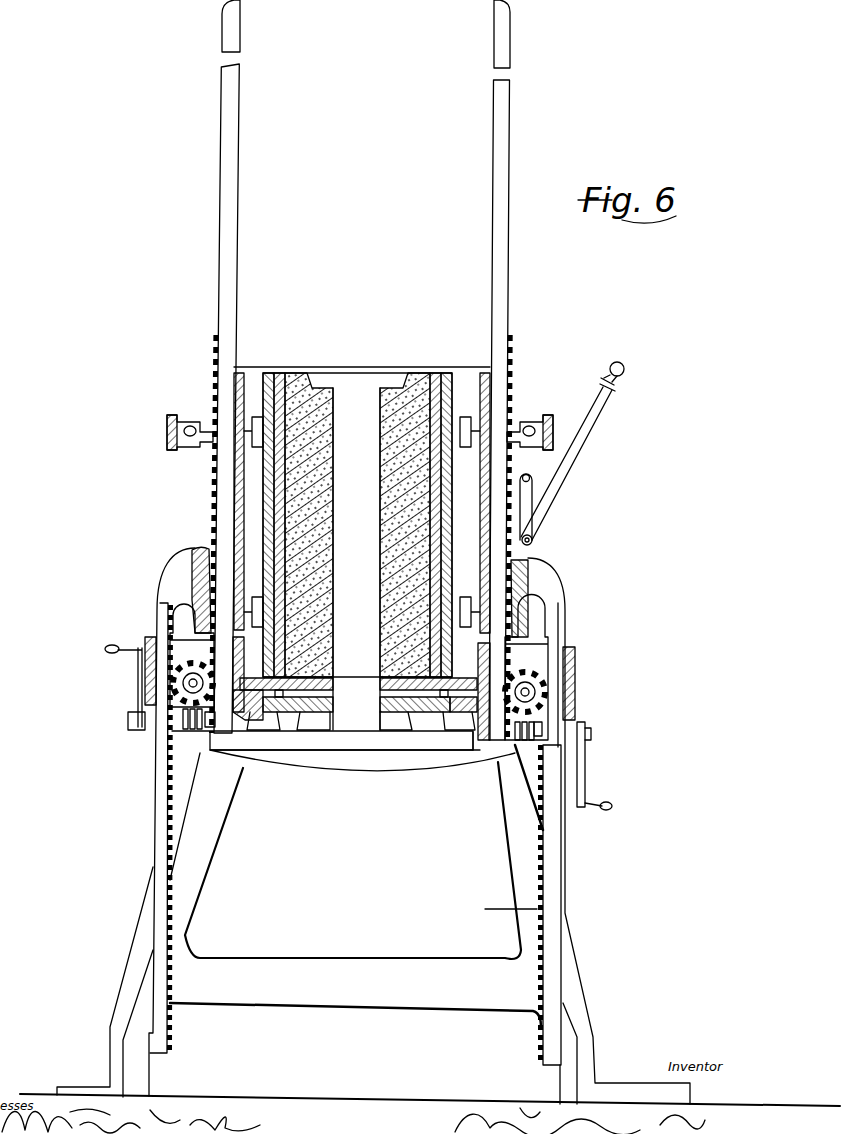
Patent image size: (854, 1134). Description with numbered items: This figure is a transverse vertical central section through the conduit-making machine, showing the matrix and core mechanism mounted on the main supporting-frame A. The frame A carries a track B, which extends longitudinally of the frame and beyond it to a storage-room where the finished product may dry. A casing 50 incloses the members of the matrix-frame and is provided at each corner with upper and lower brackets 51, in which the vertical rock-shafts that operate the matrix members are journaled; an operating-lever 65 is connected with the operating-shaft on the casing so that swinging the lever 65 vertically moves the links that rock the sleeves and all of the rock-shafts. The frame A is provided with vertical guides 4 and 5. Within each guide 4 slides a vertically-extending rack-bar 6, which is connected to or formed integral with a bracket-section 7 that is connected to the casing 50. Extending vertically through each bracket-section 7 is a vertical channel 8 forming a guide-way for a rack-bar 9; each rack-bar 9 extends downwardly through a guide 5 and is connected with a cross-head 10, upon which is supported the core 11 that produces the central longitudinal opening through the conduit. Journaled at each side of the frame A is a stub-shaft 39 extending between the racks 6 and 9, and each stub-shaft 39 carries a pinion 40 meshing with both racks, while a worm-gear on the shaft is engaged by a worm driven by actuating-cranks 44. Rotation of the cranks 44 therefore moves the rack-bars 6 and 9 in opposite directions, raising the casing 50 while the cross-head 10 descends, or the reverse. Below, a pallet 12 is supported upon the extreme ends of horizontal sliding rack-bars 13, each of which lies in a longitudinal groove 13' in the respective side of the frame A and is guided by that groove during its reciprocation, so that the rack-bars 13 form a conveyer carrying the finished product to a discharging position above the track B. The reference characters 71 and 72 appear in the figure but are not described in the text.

The rack-bar 9 is at (234, 222).
The casing 50 is at (471, 362).
The core 11 is at (356, 559).
The upper and lower brackets 51 is at (190, 420).
The screw head 71 is at (189, 446).
The lug 72 is at (362, 522).
The operating-lever 65 is at (586, 437).
The vertical channel 8 is at (197, 548).
The bracket-section 7 is at (192, 575).
The rack-bar 6 is at (153, 822).
The stub-shaft 39 is at (540, 700).
The pinion 40 is at (548, 691).
The vertical guide 4 is at (145, 638).
The actuating-crank 44 is at (138, 684).
The pallet 12 is at (380, 688).
The horizontal sliding rack-bar 13 is at (362, 758).
The longitudinal groove 13' is at (283, 742).
The cross-head 10 is at (343, 751).
The vertical guide 5 is at (253, 710).
The track B is at (240, 760).
The main supporting-frame A is at (355, 1002).